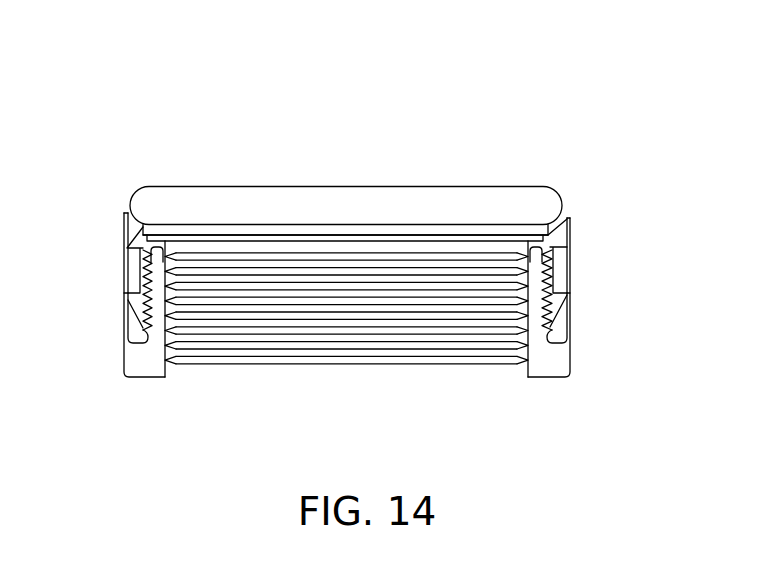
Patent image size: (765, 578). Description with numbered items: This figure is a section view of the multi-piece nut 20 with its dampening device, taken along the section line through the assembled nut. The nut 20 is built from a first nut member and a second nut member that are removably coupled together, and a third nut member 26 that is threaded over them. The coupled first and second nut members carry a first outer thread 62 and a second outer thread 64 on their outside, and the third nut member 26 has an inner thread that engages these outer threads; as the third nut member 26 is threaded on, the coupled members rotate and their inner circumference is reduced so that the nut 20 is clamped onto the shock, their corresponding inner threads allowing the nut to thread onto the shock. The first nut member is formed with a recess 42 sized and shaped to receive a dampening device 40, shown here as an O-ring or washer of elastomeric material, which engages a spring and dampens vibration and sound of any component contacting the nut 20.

The multi-piece nut 20 is at (544, 107).
The third nut member 26 is at (130, 302).
The dampening device 40 is at (385, 199).
The recess 42 is at (137, 232).
The first outer thread 62 is at (131, 355).
The second outer thread 64 is at (531, 287).